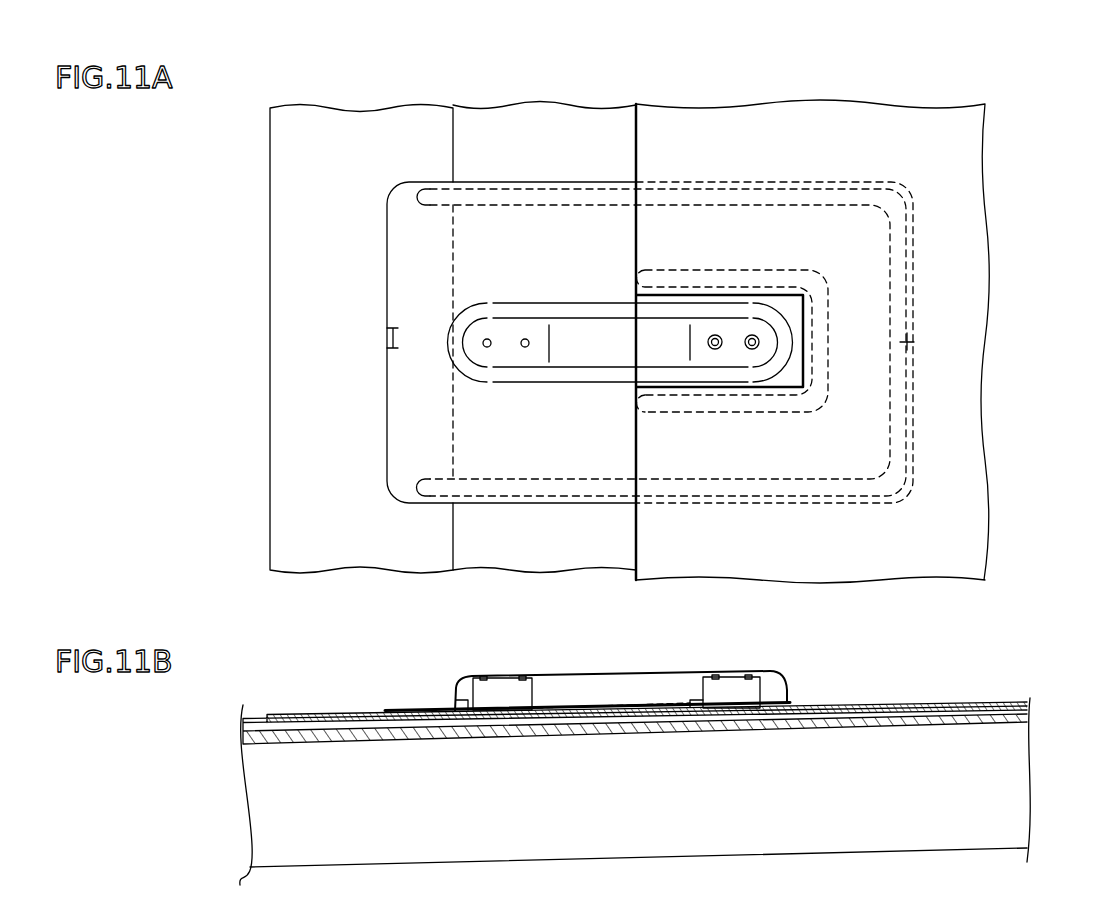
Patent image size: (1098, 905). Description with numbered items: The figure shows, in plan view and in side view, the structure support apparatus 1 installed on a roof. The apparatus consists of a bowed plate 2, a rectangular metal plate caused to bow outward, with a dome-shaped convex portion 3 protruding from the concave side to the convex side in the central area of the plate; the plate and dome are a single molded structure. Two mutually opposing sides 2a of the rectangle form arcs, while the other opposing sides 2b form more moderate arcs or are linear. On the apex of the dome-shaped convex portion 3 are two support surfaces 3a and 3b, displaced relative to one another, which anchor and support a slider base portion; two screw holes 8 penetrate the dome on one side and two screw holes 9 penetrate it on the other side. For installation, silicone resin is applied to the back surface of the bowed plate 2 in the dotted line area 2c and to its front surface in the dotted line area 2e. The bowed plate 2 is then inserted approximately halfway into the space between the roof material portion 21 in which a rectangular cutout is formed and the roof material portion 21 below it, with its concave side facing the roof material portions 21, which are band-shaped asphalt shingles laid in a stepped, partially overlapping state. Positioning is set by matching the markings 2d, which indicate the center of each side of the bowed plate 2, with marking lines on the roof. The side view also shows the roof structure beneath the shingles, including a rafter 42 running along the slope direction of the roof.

In FIG. 11A, the structure support apparatus 1 is at (552, 183).
In FIG. 11A, the bowed plate 2 is at (423, 197).
In FIG. 11B, the bowed plate 2 is at (420, 710).
In FIG. 11A, the sides of the bowed plate forming arcs 2a is at (387, 456).
In FIG. 11A, the other opposing sides of the bowed plate 2b is at (505, 180).
In FIG. 11A, the dotted line area on back surface 2c is at (736, 193).
In FIG. 11A, the markings 2d is at (637, 188).
In FIG. 11A, the dotted line area on front surface 2e is at (822, 282).
In FIG. 11A, the dome-shaped convex portion 3 is at (620, 331).
In FIG. 11B, the dome-shaped convex portion 3 is at (787, 686).
In FIG. 11A, the support surface 3a is at (518, 330).
In FIG. 11A, the support surface 3b is at (712, 334).
In FIG. 11A, the screw holes 8 is at (487, 347).
In FIG. 11A, the screw holes 9 is at (751, 350).
In FIG. 11A, the roof material portions 21 is at (388, 553).
In FIG. 11B, the roof material portions 21 is at (322, 713).
In FIG. 11B, the rafters 42 is at (820, 846).